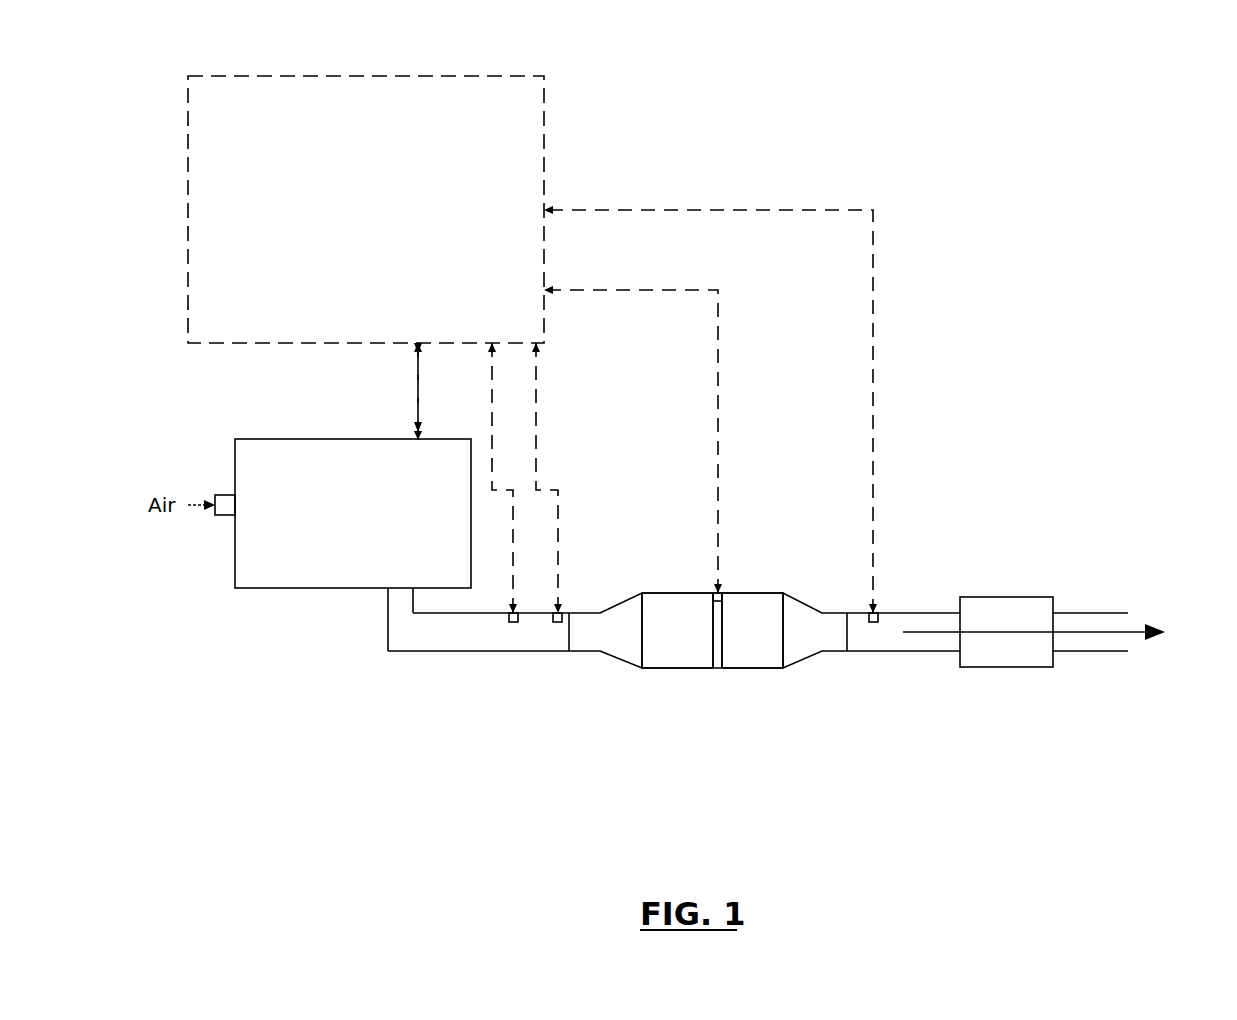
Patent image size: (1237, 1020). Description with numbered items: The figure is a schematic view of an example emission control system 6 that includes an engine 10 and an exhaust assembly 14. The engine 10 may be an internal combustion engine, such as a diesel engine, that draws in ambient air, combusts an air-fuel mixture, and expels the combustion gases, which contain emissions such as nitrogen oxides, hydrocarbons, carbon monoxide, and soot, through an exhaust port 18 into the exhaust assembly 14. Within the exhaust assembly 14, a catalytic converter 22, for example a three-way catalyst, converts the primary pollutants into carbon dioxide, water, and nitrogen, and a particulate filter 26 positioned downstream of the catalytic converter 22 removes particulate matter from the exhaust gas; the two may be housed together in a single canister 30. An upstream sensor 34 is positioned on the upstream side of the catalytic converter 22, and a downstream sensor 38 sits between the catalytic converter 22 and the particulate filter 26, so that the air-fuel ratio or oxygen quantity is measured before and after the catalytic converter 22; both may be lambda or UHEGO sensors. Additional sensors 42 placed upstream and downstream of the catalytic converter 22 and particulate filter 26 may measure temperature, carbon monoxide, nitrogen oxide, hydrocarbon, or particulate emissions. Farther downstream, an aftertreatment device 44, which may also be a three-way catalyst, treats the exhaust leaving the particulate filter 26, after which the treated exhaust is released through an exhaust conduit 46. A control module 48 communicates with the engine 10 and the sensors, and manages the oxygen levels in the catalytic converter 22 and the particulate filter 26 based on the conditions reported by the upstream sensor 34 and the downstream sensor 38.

The emission control system 6 is at (995, 232).
The engine 10 is at (353, 439).
The exhaust assembly 14 is at (980, 575).
The exhaust port 18 is at (400, 600).
The catalytic converter 22 is at (660, 655).
The particulate filter 26 is at (755, 630).
The canister 30 is at (763, 670).
The upstream sensor 34 is at (570, 613).
The downstream sensor 38 is at (718, 593).
The additional sensors 42 is at (513, 622).
The aftertreatment device 44 is at (1008, 597).
The exhaust conduit 46 is at (1128, 613).
The control module 48 is at (371, 76).